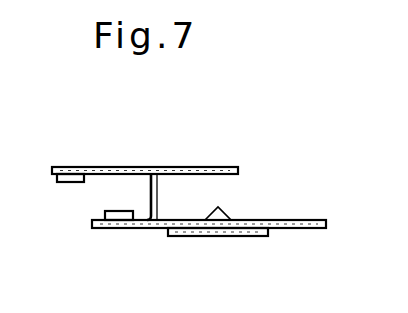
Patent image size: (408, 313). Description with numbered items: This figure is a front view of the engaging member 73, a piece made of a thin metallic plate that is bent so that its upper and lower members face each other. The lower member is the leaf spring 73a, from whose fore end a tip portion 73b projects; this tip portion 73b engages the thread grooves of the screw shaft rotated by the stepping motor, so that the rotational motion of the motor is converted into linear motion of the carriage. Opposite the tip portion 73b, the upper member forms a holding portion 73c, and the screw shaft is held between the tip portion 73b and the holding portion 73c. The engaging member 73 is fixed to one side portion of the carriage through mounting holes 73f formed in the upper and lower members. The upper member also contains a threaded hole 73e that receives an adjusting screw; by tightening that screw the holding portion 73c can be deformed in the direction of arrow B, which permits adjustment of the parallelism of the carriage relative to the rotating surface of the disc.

The engaging member 73 is at (248, 160).
The leaf spring 73a is at (257, 238).
The tip portion 73b is at (208, 217).
The holding portion 73c is at (195, 167).
The threaded hole 73e is at (118, 166).
The mounting holes 73f is at (110, 211).
The direction of arrow B is at (291, 172).